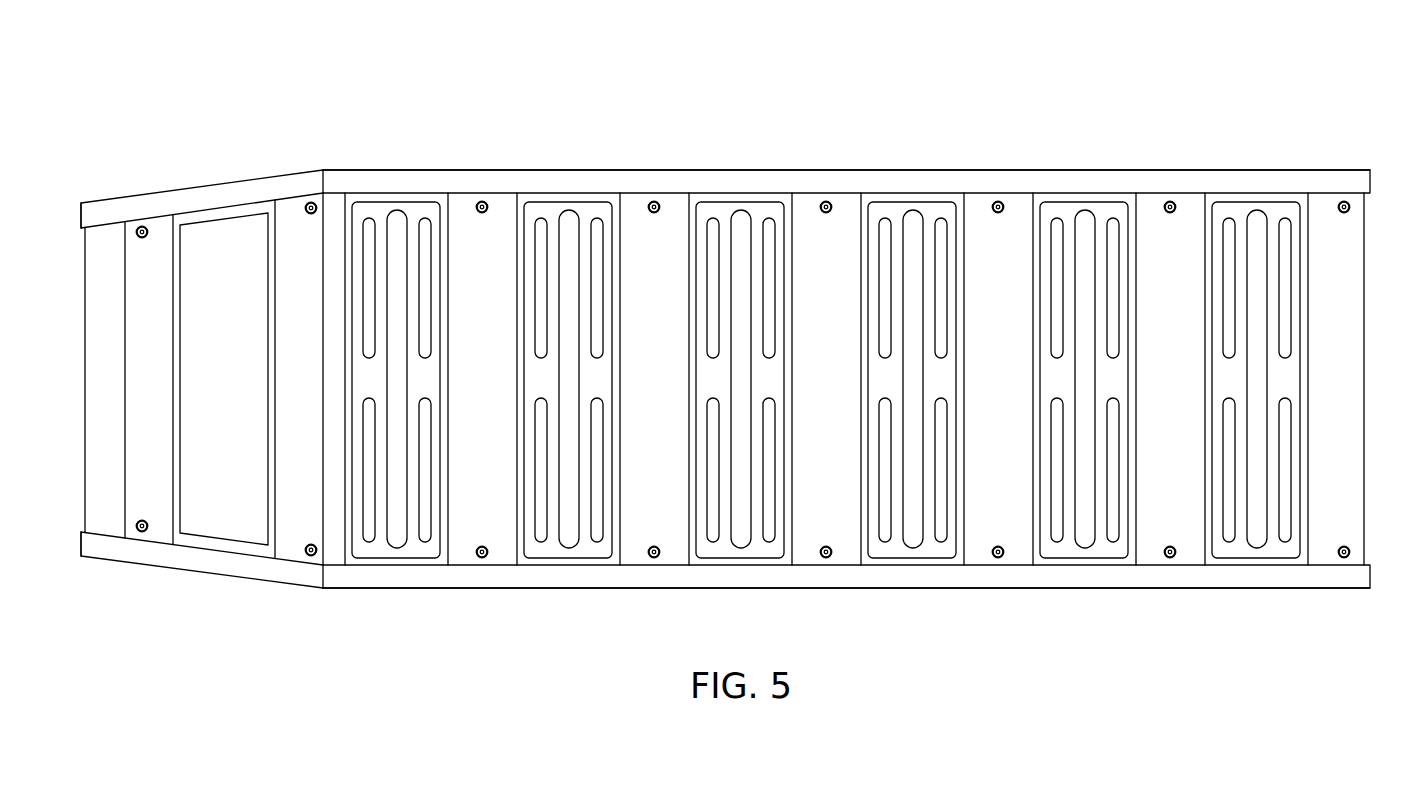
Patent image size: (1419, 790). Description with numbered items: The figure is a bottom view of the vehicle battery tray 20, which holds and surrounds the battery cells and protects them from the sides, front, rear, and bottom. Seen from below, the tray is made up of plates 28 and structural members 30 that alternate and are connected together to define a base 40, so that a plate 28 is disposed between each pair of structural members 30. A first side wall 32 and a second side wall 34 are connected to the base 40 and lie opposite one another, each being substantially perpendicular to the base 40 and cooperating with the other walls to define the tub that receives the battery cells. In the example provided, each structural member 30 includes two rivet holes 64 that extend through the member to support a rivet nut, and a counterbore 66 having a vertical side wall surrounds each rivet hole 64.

The vehicle battery tray 20 is at (1298, 90).
The plates 28 is at (413, 212).
The structural members 30 is at (332, 227).
The first side wall 32 is at (812, 168).
The second side wall 34 is at (973, 592).
The base 40 is at (1346, 268).
The rivet hole 64 is at (313, 215).
The counterbore 66 is at (305, 210).